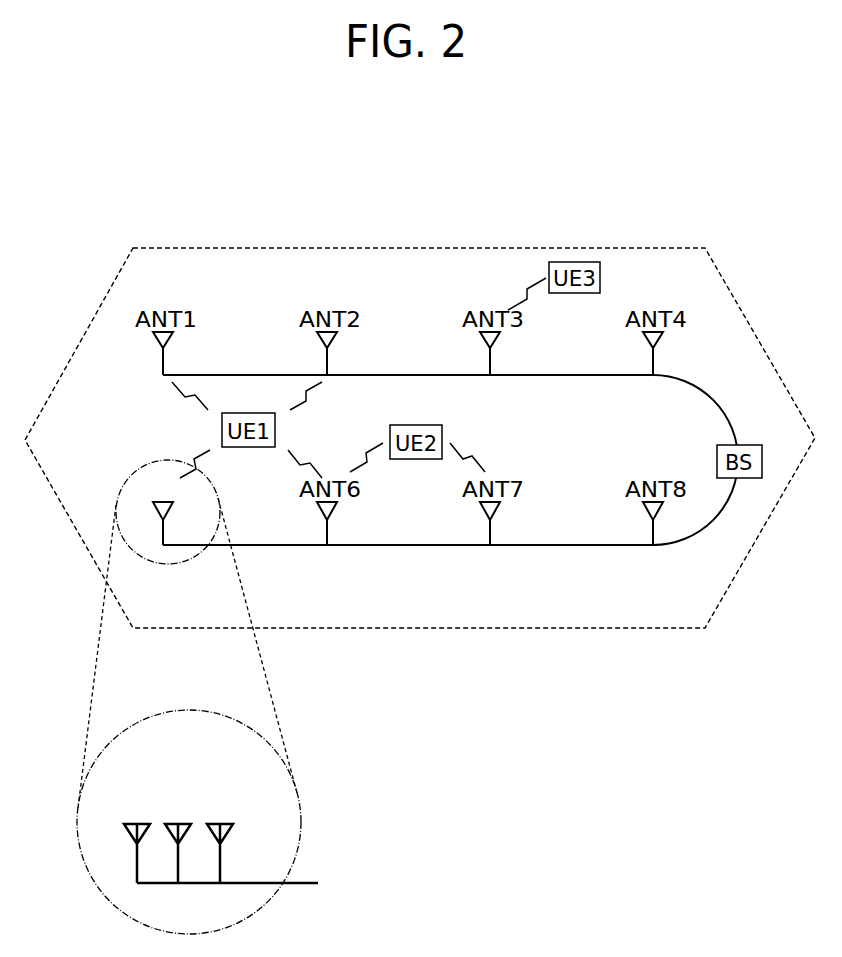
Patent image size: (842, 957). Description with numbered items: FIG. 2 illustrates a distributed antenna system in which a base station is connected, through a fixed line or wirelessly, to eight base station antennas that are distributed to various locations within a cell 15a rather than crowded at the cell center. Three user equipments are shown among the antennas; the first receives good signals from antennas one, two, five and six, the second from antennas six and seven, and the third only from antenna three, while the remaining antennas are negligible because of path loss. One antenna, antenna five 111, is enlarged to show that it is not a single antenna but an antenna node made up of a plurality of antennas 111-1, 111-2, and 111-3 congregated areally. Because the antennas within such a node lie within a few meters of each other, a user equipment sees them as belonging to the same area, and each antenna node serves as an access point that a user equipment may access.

The cell 15a is at (494, 247).
The antenna 5 111 is at (118, 491).
The antenna 111-1 is at (133, 822).
The antenna 111-2 is at (185, 822).
The antenna 111-3 is at (222, 822).